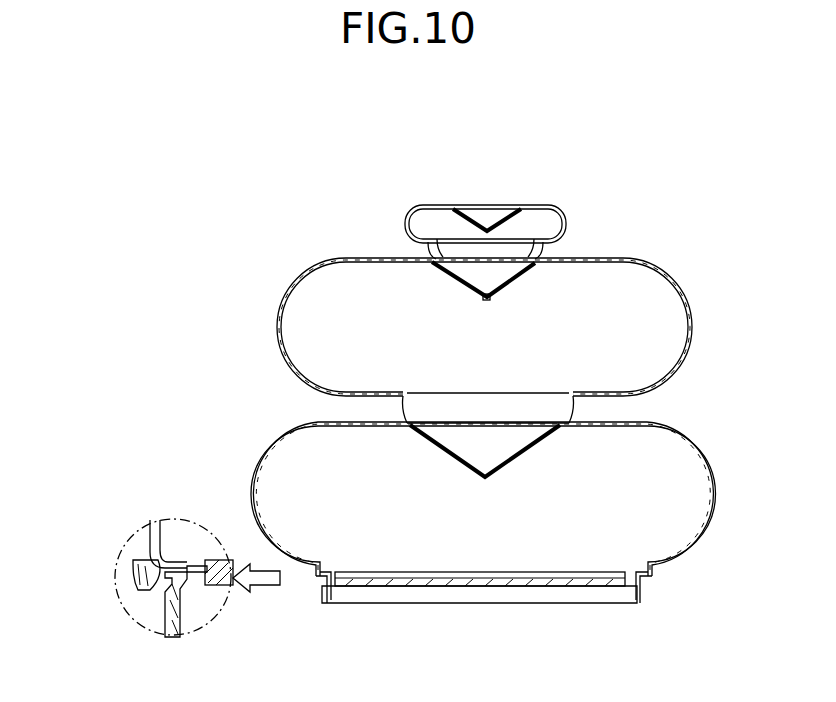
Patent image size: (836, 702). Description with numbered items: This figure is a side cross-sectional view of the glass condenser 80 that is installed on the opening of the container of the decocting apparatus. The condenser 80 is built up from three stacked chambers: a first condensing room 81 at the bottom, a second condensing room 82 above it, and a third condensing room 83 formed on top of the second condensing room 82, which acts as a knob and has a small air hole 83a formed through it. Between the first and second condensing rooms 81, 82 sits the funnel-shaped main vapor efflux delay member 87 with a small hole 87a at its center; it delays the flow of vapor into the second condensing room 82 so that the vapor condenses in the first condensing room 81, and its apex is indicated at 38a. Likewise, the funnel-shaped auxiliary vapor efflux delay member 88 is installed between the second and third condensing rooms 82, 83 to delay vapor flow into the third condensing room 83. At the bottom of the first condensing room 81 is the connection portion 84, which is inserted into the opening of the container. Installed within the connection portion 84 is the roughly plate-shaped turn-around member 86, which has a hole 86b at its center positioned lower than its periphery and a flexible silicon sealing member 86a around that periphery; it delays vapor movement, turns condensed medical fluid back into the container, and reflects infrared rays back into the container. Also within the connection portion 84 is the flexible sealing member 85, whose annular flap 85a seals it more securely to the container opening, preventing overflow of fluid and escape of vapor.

The condenser 80 is at (479, 364).
The first condensing room 81 is at (712, 465).
The second condensing room 82 is at (677, 283).
The third condensing room 83 is at (567, 221).
The air hole 83a is at (488, 217).
The rib joint 38a is at (483, 298).
The auxiliary vapor efflux delay member 88 is at (532, 270).
The main vapor efflux delay member 87 is at (528, 445).
The small hole 87a is at (483, 477).
The turn-around member 86 is at (549, 601).
The sealing member 86a is at (150, 553).
The hole 86b is at (490, 586).
The sealing member 85 is at (325, 596).
The annular flap 85a is at (143, 578).
The connection portion 84 is at (630, 604).